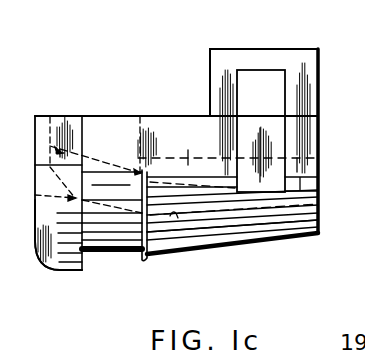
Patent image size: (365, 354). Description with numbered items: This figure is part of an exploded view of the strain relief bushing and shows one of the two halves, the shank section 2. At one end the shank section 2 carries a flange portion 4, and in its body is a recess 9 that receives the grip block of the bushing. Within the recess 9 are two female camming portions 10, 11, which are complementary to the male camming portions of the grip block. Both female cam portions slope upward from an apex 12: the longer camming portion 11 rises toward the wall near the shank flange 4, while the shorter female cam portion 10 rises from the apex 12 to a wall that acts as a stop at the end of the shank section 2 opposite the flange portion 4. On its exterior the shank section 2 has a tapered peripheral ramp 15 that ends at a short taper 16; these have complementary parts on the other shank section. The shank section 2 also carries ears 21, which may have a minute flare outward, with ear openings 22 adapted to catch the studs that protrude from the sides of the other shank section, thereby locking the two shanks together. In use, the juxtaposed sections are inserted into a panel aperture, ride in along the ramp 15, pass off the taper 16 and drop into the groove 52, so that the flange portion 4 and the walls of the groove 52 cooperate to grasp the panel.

The shank section 2 is at (161, 163).
The flange portion 4 is at (40, 261).
The recess 9 is at (97, 127).
The female camming portion 10 is at (293, 244).
The female camming portion 11 is at (173, 251).
The apex 12 is at (207, 225).
The tapered peripheral ramp 15 is at (257, 202).
The short taper 16 is at (147, 258).
The ear 21 is at (298, 62).
The ear opening 22 is at (275, 98).
The groove 52 is at (110, 250).